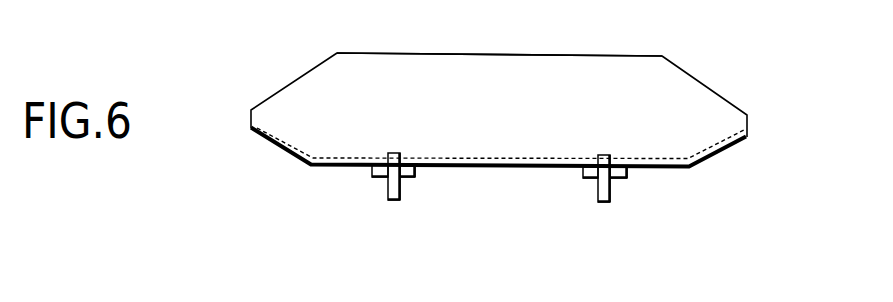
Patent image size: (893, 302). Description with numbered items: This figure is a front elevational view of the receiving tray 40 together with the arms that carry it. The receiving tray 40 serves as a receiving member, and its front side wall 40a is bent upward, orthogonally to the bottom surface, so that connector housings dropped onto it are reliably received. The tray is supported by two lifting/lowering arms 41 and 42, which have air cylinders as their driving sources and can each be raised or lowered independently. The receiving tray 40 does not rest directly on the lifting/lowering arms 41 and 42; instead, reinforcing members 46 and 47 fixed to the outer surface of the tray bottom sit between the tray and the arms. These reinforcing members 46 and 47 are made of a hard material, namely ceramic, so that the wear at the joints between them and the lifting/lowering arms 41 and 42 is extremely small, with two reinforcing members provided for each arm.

The receiving tray 40 is at (698, 93).
The front side wall 40a is at (475, 67).
The lifting/lowering arm 41 is at (388, 192).
The lifting/lowering arm 42 is at (610, 190).
The reinforcing member 46 is at (415, 178).
The reinforcing member 47 is at (583, 178).